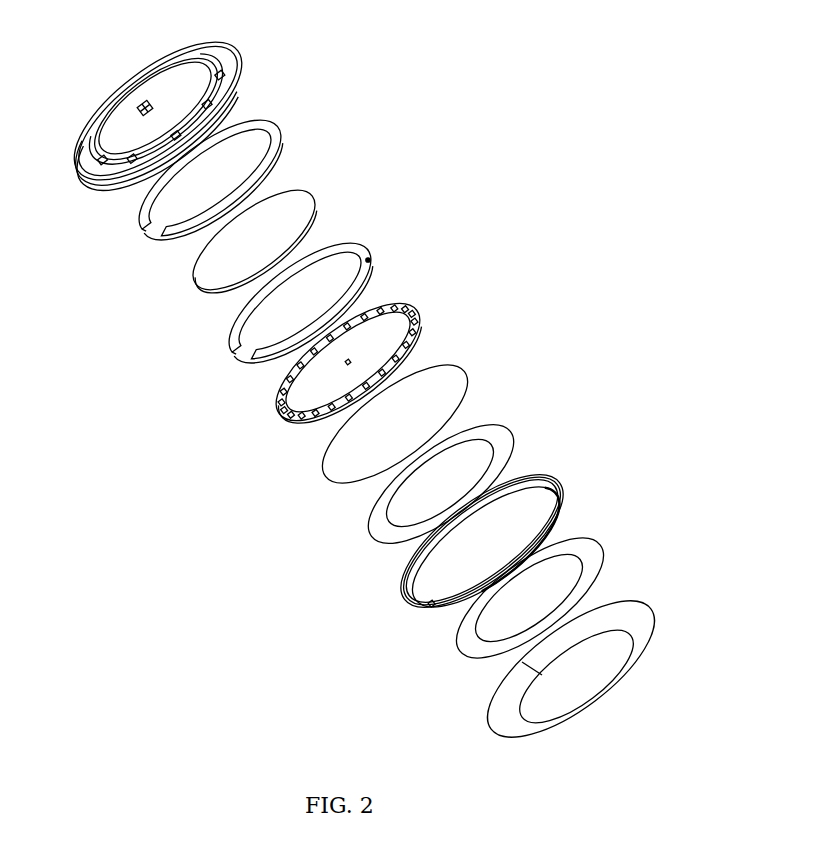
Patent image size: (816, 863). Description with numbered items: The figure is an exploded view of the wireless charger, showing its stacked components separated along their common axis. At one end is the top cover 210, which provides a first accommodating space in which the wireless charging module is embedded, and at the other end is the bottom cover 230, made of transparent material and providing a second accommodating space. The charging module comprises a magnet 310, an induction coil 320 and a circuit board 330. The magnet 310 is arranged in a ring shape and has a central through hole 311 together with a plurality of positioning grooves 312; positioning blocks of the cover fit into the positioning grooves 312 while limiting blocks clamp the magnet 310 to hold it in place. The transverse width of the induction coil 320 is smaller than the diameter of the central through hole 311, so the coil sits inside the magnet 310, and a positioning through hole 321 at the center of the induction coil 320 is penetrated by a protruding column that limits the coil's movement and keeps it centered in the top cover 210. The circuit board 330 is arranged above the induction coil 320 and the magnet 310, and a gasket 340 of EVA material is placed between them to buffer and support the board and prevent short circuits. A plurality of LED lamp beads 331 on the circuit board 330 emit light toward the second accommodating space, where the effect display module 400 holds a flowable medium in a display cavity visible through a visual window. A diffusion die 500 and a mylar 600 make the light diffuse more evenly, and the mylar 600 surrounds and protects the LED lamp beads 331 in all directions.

The top cover 210 is at (192, 85).
The bottom cover 230 is at (512, 712).
The magnet 310 is at (268, 187).
The central through hole 311 is at (198, 187).
The positioning grooves 312 is at (213, 207).
The induction coil 320 is at (365, 385).
The positioning through hole 321 is at (255, 242).
The circuit board 330 is at (272, 344).
The LED lamp beads 331 is at (418, 320).
The gasket 340 is at (368, 260).
The effect display module 400 is at (473, 645).
The diffusion die 500 is at (343, 458).
The mylar 600 is at (387, 530).